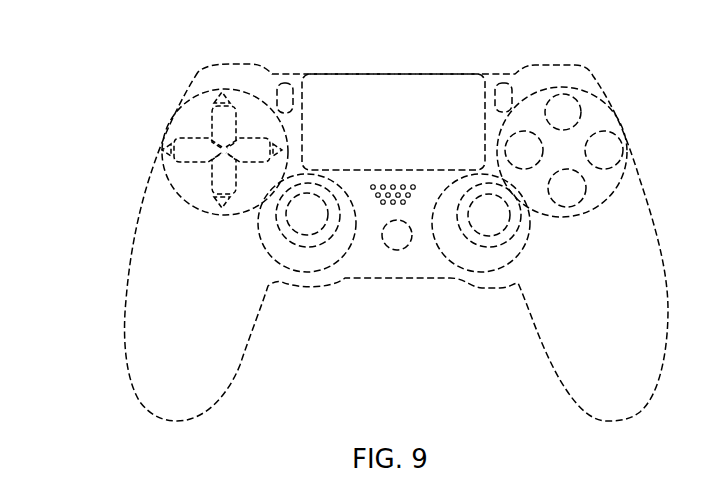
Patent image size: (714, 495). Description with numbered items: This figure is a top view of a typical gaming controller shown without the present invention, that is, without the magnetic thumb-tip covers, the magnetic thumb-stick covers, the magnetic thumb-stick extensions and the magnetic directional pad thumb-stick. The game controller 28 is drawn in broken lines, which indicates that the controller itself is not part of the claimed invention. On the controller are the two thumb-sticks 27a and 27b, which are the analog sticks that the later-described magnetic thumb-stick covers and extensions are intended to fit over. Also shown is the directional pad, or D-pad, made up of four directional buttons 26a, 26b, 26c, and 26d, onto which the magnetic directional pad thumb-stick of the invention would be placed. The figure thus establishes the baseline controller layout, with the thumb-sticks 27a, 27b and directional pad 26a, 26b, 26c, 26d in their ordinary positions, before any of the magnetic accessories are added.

The directional pad 26a is at (213, 110).
The directional pad 26b is at (197, 149).
The directional pad 26c is at (217, 178).
The directional pad 26d is at (257, 144).
The thumb-stick 27a is at (303, 204).
The thumb-stick 27b is at (478, 215).
The game controller 28 is at (137, 388).